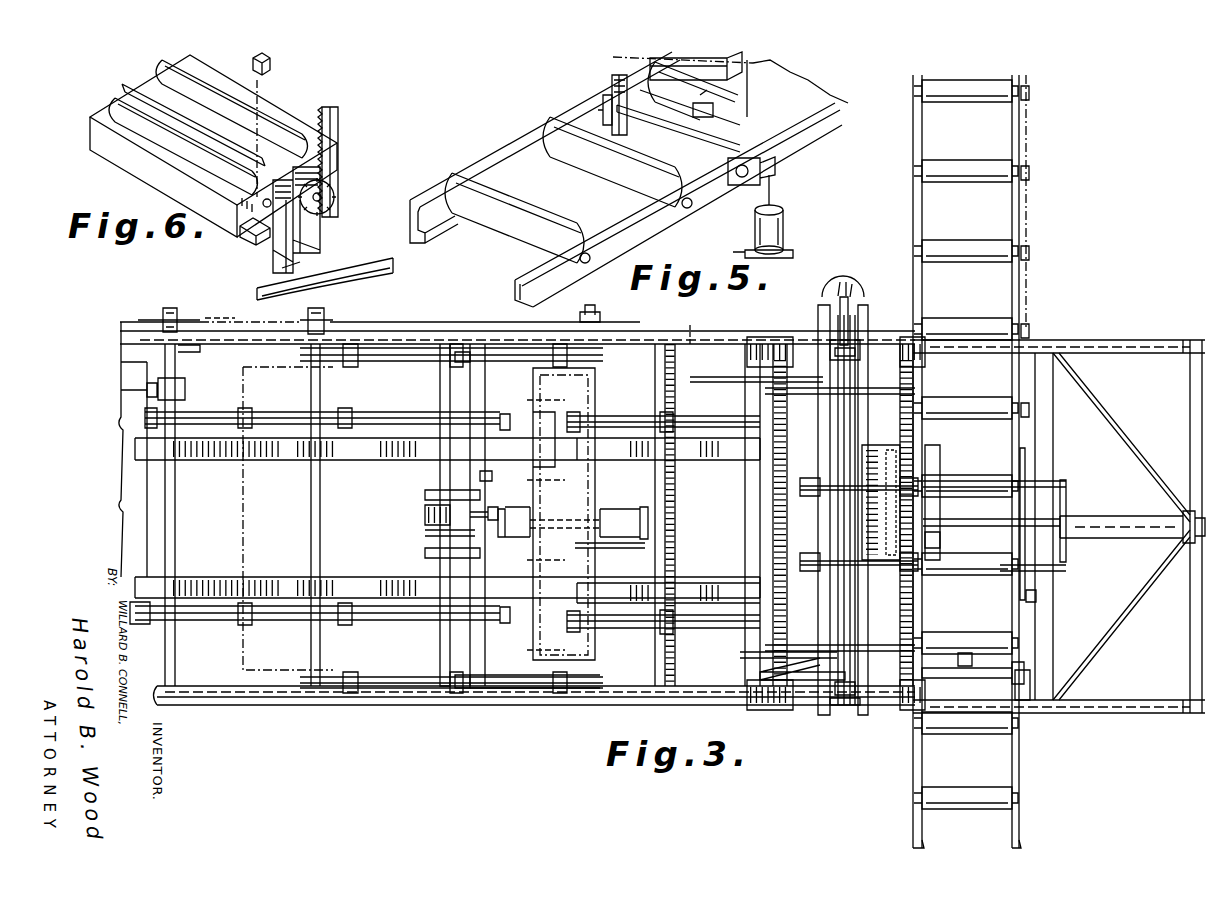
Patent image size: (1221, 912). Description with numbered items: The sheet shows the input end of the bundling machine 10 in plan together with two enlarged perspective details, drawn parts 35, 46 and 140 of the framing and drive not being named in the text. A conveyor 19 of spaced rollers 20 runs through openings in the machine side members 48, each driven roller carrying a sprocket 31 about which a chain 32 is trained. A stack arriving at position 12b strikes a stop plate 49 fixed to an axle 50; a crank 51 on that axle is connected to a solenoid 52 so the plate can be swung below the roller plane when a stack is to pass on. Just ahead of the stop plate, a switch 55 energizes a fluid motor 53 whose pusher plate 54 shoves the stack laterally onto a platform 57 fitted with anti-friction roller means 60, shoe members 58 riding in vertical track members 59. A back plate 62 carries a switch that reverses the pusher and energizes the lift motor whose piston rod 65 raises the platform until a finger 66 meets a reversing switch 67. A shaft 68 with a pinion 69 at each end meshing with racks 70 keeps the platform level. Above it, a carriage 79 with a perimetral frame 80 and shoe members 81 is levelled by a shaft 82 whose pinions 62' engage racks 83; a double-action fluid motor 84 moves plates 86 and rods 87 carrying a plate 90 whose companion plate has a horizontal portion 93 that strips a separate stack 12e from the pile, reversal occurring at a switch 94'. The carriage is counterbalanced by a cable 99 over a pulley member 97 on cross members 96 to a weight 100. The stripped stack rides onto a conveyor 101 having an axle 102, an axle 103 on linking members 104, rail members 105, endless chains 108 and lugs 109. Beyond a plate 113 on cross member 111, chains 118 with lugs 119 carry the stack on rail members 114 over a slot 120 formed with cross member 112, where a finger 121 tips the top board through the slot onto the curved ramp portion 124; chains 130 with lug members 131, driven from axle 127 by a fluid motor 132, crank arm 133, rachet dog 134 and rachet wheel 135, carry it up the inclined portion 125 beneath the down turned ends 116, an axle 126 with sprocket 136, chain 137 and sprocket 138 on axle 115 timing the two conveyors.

In FIG. 3, the machine 10 is at (439, 744).
In FIG. 5, the stack position 12b is at (810, 80).
In FIG. 3, the separate stack 12e is at (687, 327).
In FIG. 5, the conveyor 19 is at (497, 104).
In FIG. 3, the conveyor 19 is at (1049, 190).
In FIG. 5, the rollers 20 is at (543, 208).
In FIG. 3, the rollers 20 is at (975, 102).
In FIG. 3, the sprocket 31 is at (1031, 94).
In FIG. 3, the chain 32 is at (1028, 130).
In FIG. 3, the shaft 35 is at (838, 497).
In FIG. 3, the side frame 46 is at (1094, 345).
In FIG. 6, the side members 48 is at (360, 252).
In FIG. 5, the stop plate 49 is at (612, 82).
In FIG. 3, the stop plate 49 is at (1000, 668).
In FIG. 5, the axle 50 is at (603, 98).
In FIG. 5, the crank 51 is at (778, 165).
In FIG. 5, the solenoid 52 is at (785, 215).
In FIG. 3, the fluid motor 53 is at (1120, 515).
In FIG. 3, the pusher plate 54 is at (1028, 462).
In FIG. 5, the switch 55 is at (716, 108).
In FIG. 3, the switch 55 is at (968, 653).
In FIG. 6, the platform 57 is at (283, 118).
In FIG. 6, the shoe members 58 is at (280, 240).
In FIG. 6, the track members 59 is at (300, 268).
In FIG. 6, the anti-friction roller means 60 is at (250, 160).
In FIG. 3, the back plate 62 is at (1048, 661).
In FIG. 3, the block 62' is at (860, 520).
In FIG. 3, the piston rod 65 is at (965, 518).
In FIG. 6, the finger 66 is at (245, 235).
In FIG. 3, the finger 66 is at (1036, 598).
In FIG. 6, the reversing switch 67 is at (272, 62).
In FIG. 6, the shaft 68 is at (120, 86).
In FIG. 6, the pinion 69 is at (336, 192).
In FIG. 6, the racks 70 is at (340, 122).
In FIG. 3, the carriage 79 is at (806, 332).
In FIG. 3, the perimetral frame 80 is at (760, 384).
In FIG. 3, the shoe members 81 is at (1060, 572).
In FIG. 3, the shaft 82 is at (800, 685).
In FIG. 3, the racks 83 is at (850, 706).
In FIG. 3, the double-action fluid motor 84 is at (878, 490).
In FIG. 3, the plates 86 is at (748, 500).
In FIG. 3, the rods 87 is at (1067, 482).
In FIG. 3, the plate 90 is at (880, 445).
In FIG. 3, the horizontal portion 93 is at (936, 450).
In FIG. 3, the switch 94' is at (956, 540).
In FIG. 3, the cross members 96 is at (863, 705).
In FIG. 3, the pulley member 97 is at (838, 290).
In FIG. 3, the cable 99 is at (852, 340).
In FIG. 3, the weight 100 is at (852, 290).
In FIG. 3, the conveyor 101 is at (628, 405).
In FIG. 3, the axle 102 is at (596, 318).
In FIG. 3, the axle 103 is at (760, 398).
In FIG. 3, the linking members 104 is at (752, 337).
In FIG. 3, the rail members 105 is at (632, 455).
In FIG. 3, the endless chains 108 is at (706, 420).
In FIG. 3, the lugs 109 is at (672, 430).
In FIG. 3, the cross member 111 is at (533, 555).
In FIG. 3, the cross member 112 is at (482, 476).
In FIG. 3, the plate 113 is at (595, 545).
In FIG. 3, the rail members 114 is at (385, 460).
In FIG. 3, the axle 115 is at (309, 520).
In FIG. 3, the down turned ends 116 is at (298, 455).
In FIG. 3, the endless chains 118 is at (396, 362).
In FIG. 3, the lugs 119 is at (545, 345).
In FIG. 3, the slot 120 is at (508, 690).
In FIG. 3, the finger 121 is at (418, 348).
In FIG. 3, the upwardly curved rear portion 124 is at (518, 430).
In FIG. 3, the inclined portion 125 is at (228, 458).
In FIG. 3, the axle 126 is at (177, 362).
In FIG. 3, the axle 127 is at (440, 477).
In FIG. 3, the endless chains 130 is at (390, 425).
In FIG. 3, the lug members 131 is at (342, 412).
In FIG. 3, the fluid motor 132 is at (605, 505).
In FIG. 3, the crank arm 133 is at (496, 508).
In FIG. 3, the rachet dog 134 is at (426, 533).
In FIG. 3, the rachet wheel 135 is at (425, 515).
In FIG. 3, the sprocket 136 is at (198, 307).
In FIG. 3, the chain 137 is at (262, 320).
In FIG. 3, the sprocket 138 is at (328, 320).
In FIG. 3, the upright 140 is at (396, 325).